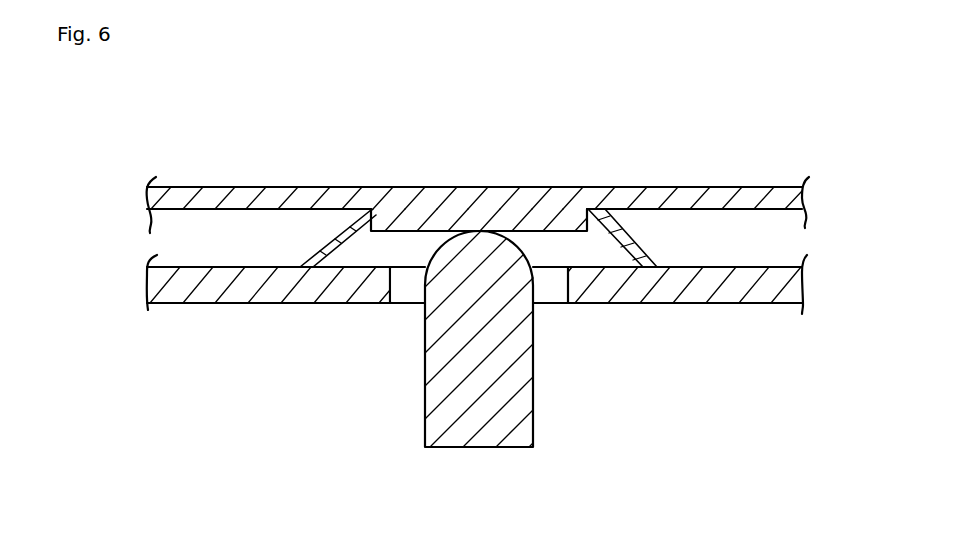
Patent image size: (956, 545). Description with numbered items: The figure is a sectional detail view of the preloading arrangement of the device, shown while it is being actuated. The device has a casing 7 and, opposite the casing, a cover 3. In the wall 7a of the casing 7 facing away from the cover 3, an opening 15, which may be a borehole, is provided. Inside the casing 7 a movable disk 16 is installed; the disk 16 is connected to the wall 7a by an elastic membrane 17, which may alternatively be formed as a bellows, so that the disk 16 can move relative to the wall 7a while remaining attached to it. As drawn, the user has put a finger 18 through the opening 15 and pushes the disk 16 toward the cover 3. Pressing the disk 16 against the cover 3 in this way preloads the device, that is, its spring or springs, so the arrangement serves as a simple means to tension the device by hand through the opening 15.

The cover 3 is at (212, 196).
The casing 7 is at (190, 287).
The wall 7a is at (672, 290).
The opening 15 is at (410, 282).
The movable disk 16 is at (482, 213).
The elastic membrane 17 is at (603, 212).
The finger 18 is at (513, 370).